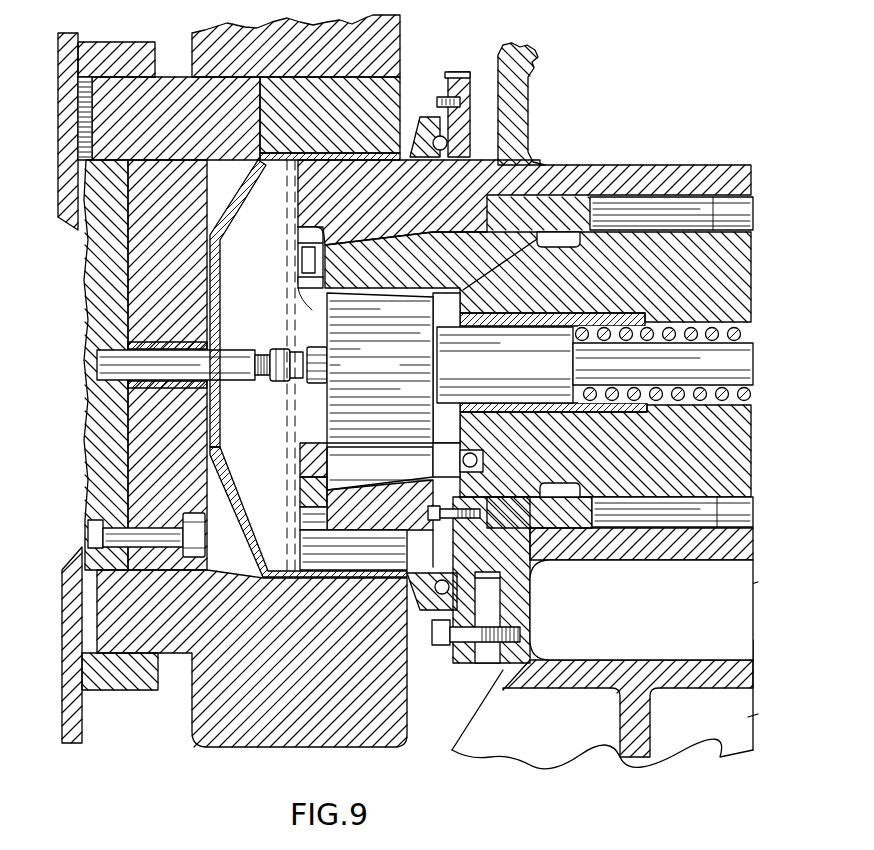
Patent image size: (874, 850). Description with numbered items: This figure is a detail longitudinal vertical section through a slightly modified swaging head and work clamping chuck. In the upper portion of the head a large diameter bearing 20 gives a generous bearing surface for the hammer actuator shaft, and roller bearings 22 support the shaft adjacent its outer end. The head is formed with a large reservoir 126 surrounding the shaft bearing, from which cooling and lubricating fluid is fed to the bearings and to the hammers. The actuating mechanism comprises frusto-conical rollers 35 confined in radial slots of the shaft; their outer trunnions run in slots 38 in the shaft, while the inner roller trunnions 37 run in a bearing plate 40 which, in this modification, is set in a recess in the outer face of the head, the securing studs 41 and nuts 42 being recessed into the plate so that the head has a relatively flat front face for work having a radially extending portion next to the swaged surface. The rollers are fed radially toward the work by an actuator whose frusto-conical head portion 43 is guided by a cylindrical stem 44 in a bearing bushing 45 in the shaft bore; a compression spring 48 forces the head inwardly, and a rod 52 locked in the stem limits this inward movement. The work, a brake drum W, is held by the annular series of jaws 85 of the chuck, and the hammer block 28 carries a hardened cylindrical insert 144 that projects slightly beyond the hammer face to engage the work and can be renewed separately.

The brake drum W is at (236, 196).
The large diameter bearing 20 is at (567, 217).
The roller bearings 22 is at (690, 203).
The hammer block 28 is at (380, 505).
The rollers 35 is at (405, 466).
The inner roller trunnions 37 is at (303, 453).
The slots 38 is at (454, 536).
The bearing plate 40 is at (322, 292).
The securing studs 41 is at (305, 287).
The nuts 42 is at (307, 265).
The frusto-conical head portion 43 is at (393, 368).
The cylindrical stem 44 is at (505, 365).
The bearing bushing 45 is at (327, 500).
The compression spring 48 is at (745, 326).
The rod 52 is at (745, 365).
The jaws 85 is at (252, 658).
The reservoir 126 is at (641, 610).
The hardened cylindrical insert 144 is at (312, 541).